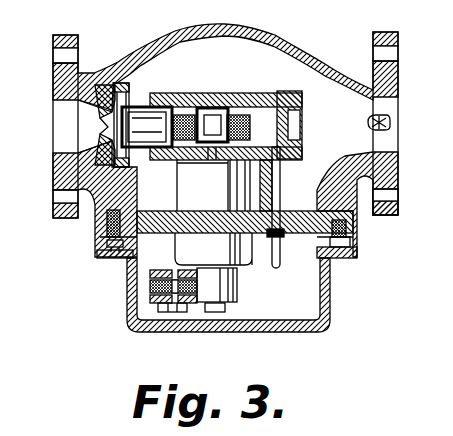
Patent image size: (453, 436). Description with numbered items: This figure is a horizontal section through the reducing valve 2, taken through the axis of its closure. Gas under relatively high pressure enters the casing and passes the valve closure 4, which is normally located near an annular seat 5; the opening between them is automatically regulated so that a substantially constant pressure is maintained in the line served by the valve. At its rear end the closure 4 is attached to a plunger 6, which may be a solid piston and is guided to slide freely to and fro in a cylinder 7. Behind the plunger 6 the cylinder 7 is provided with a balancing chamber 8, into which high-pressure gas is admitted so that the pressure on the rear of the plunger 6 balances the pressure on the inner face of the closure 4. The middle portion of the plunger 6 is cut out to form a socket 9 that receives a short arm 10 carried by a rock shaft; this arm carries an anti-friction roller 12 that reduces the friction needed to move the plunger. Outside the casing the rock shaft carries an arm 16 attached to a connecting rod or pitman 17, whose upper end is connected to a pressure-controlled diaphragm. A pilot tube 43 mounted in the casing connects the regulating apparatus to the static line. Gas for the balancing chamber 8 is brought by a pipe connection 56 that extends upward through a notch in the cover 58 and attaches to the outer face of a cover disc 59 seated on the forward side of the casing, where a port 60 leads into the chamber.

The reducing valve 2 is at (302, 82).
The valve closure 4 is at (107, 127).
The annular seat 5 is at (112, 96).
The plunger 6 is at (189, 108).
The cylinder 7 is at (246, 93).
The balancing chamber 8 is at (284, 93).
The socket 9 is at (225, 108).
The short arm 10 is at (212, 150).
The anti-friction roller 12 is at (227, 160).
The arm 16 is at (221, 293).
The connecting rod 17 is at (150, 289).
The pilot tube 43 is at (390, 116).
The pipe connection 56 is at (280, 259).
The cover 58 is at (323, 285).
The cover disc 59 is at (163, 201).
The port 60 is at (281, 182).